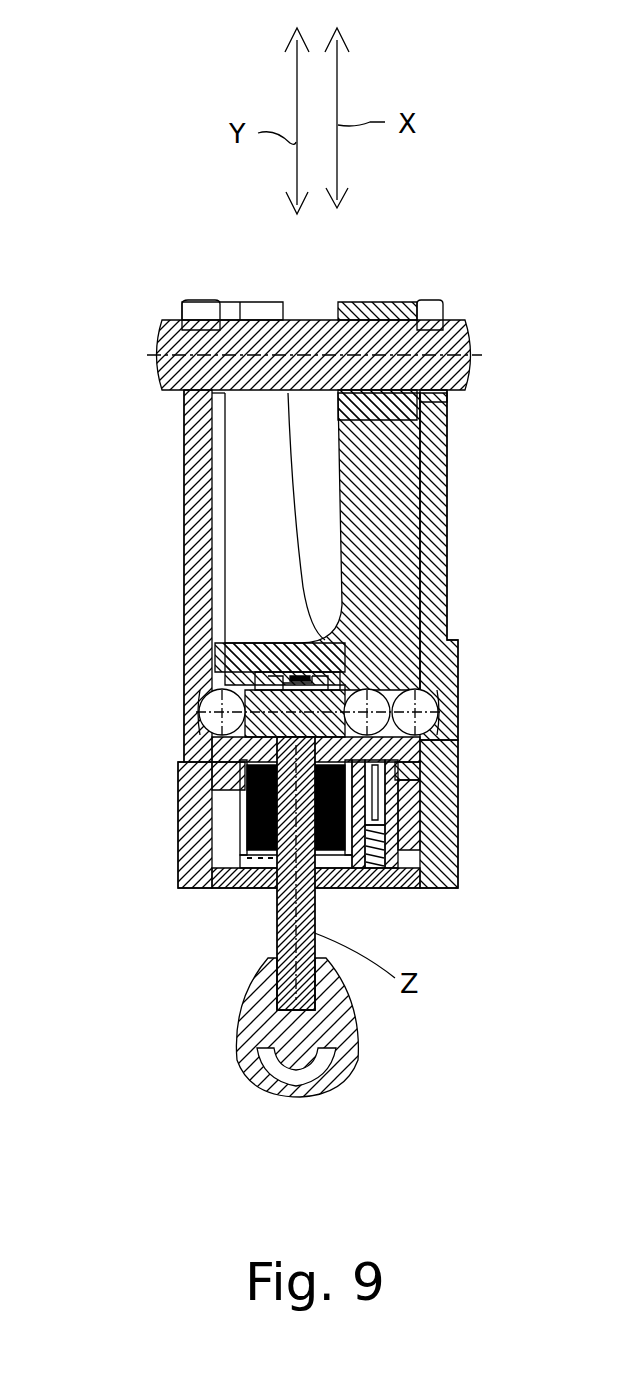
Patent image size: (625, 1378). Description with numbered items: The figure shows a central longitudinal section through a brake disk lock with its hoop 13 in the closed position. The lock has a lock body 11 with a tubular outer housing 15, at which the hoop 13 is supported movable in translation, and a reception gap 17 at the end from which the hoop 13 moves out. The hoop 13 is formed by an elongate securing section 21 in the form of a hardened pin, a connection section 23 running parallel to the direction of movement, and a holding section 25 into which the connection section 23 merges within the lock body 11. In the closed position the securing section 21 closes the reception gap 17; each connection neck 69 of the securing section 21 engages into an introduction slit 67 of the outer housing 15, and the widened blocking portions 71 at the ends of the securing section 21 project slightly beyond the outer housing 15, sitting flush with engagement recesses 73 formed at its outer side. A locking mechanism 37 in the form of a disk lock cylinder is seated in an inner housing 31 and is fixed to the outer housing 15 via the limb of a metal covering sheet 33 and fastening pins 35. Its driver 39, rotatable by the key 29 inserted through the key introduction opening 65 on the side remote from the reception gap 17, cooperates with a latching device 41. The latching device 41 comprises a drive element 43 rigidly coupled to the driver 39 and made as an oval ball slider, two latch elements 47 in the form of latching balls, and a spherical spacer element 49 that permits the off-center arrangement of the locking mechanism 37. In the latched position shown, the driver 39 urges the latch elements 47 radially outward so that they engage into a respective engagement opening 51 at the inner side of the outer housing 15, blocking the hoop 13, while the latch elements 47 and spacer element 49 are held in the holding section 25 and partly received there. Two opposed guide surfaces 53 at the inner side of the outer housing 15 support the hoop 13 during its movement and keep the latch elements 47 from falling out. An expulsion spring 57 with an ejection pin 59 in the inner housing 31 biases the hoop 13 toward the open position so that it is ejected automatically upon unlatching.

The lock body 11 is at (128, 462).
The hoop 13 is at (285, 262).
The outer housing 15 is at (192, 508).
The reception gap 17 is at (298, 522).
The securing section 21 is at (316, 340).
The connection section 23 is at (397, 478).
The holding section 25 is at (388, 672).
The key 29 is at (250, 1052).
The inner housing 31 is at (232, 855).
The metal covering sheet 33 is at (243, 885).
The fastening pins 35 is at (440, 800).
The locking mechanism 37 is at (236, 797).
The driver 39 is at (258, 745).
The latching device 41 is at (243, 668).
The drive element 43 is at (262, 700).
The latch elements 47 is at (210, 702).
The spacer element 49 is at (383, 713).
The engagement opening 51 is at (195, 733).
The guide surfaces 53 is at (222, 440).
The expulsion spring 57 is at (370, 878).
The ejection pin 59 is at (395, 822).
The key introduction opening 65 is at (268, 902).
The introduction slits 67 is at (424, 294).
The connection neck 69 is at (432, 345).
The widened blocking portions 71 is at (464, 355).
The engagement recesses 73 is at (455, 380).